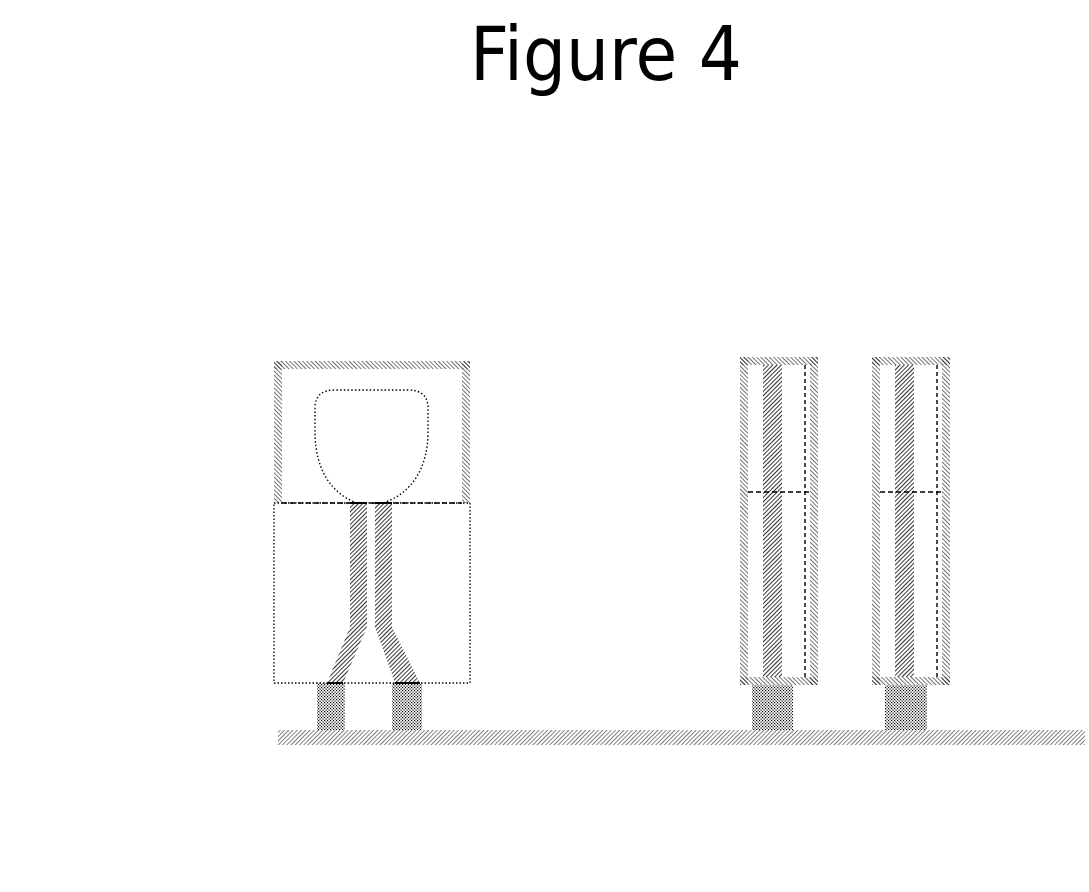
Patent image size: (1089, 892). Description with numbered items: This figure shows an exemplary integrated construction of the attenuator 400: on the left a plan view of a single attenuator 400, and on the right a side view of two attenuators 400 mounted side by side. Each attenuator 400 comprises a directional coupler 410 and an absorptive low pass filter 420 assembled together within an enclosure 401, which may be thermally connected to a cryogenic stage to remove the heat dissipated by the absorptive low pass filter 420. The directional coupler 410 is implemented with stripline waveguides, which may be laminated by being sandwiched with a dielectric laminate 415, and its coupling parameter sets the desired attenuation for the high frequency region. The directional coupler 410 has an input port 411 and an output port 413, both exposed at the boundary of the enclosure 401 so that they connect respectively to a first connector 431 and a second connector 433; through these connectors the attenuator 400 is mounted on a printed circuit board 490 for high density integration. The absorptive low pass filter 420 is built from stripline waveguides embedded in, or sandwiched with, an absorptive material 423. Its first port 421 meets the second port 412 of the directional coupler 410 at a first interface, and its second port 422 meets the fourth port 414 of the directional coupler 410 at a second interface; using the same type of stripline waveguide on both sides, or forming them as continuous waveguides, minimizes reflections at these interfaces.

The attenuator 400 is at (335, 318).
The enclosure 401 is at (733, 427).
The directional coupler 410 is at (276, 618).
The input port 411 is at (418, 682).
The second port 412 is at (392, 516).
The output port 413 is at (328, 682).
The fourth port 414 is at (350, 516).
The dielectric laminate 415 is at (428, 611).
The absorptive low pass filter 420 is at (436, 357).
The first port 421 is at (383, 498).
The second port 422 is at (358, 498).
The absorptive material 423 is at (323, 379).
The first connector 431 is at (423, 719).
The second connector 433 is at (315, 718).
The printed circuit board 490 is at (657, 727).